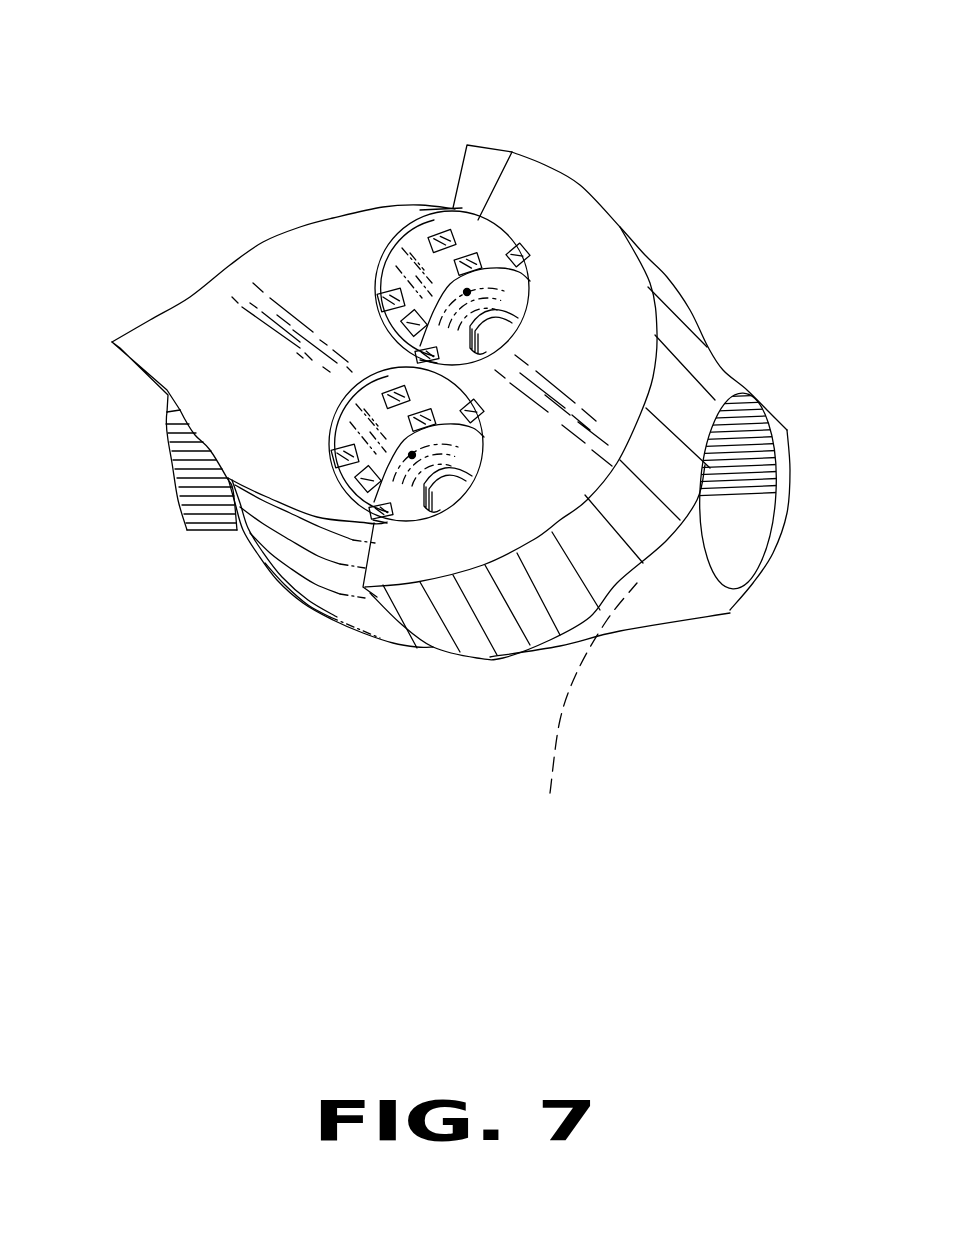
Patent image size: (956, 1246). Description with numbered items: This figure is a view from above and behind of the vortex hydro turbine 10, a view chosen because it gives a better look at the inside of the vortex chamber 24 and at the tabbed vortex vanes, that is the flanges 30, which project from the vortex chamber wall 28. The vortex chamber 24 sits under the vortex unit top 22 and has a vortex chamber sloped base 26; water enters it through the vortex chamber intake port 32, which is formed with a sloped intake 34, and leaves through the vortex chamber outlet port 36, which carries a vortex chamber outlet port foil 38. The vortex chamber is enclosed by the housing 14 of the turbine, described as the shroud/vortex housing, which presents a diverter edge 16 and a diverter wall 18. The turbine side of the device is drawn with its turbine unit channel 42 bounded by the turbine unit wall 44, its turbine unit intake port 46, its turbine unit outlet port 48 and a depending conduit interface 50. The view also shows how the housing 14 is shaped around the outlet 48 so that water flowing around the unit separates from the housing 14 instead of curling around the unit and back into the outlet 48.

The vortex hydro turbine 10 is at (703, 165).
The housing 14 is at (490, 147).
The diverter edge 16 is at (125, 372).
The diverter wall 18 is at (167, 393).
The vortex unit top 22 is at (207, 310).
The vortex chamber 24 is at (467, 292).
The vortex chamber sloped base 26 is at (518, 318).
The vortex chamber wall 28 is at (507, 240).
The flanges 30 is at (385, 300).
The vortex chamber intake port 32 is at (458, 180).
The sloped intake 34 is at (300, 583).
The vortex chamber outlet port 36 is at (500, 335).
The vortex chamber outlet port foil 38 is at (383, 247).
The turbine unit channel 42 is at (581, 708).
The turbine unit wall 44 is at (730, 563).
The turbine unit intake port 46 is at (167, 485).
The turbine unit outlet port 48 is at (740, 532).
The depending conduit interface 50 is at (497, 333).